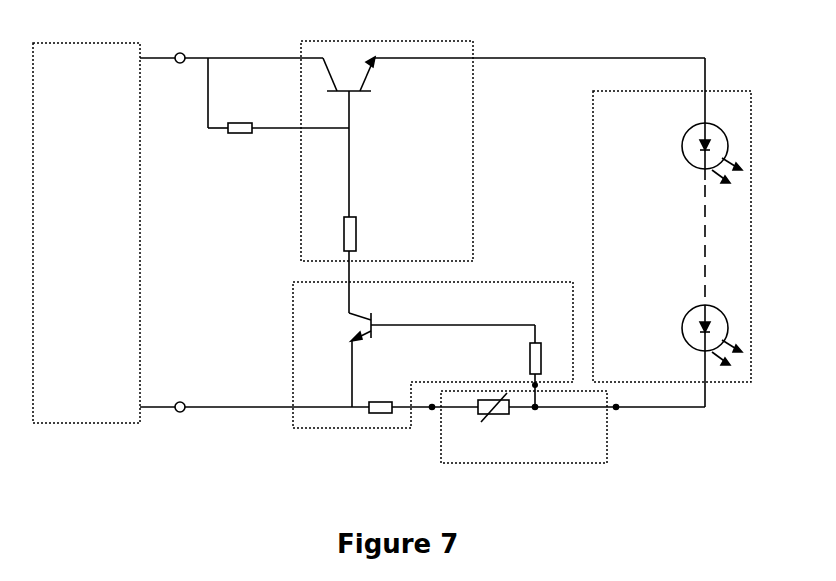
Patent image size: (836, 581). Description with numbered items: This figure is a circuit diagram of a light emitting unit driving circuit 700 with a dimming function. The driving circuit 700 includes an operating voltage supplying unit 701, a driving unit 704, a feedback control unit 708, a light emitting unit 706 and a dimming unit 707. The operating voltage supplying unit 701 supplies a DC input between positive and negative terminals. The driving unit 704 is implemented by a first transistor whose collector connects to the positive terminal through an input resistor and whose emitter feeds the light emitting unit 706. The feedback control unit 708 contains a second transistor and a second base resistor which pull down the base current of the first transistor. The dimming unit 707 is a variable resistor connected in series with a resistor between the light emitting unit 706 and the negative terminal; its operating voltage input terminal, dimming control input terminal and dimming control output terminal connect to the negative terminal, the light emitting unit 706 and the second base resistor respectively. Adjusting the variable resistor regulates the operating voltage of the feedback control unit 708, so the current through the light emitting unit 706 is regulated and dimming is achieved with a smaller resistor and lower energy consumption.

The light emitting unit driving circuit 700 is at (474, 46).
The operating voltage supplying unit 701 is at (86, 233).
The driving unit 704 is at (387, 177).
The light emitting unit 706 is at (672, 236).
The dimming unit 707 is at (522, 426).
The feedback control unit 708 is at (433, 355).